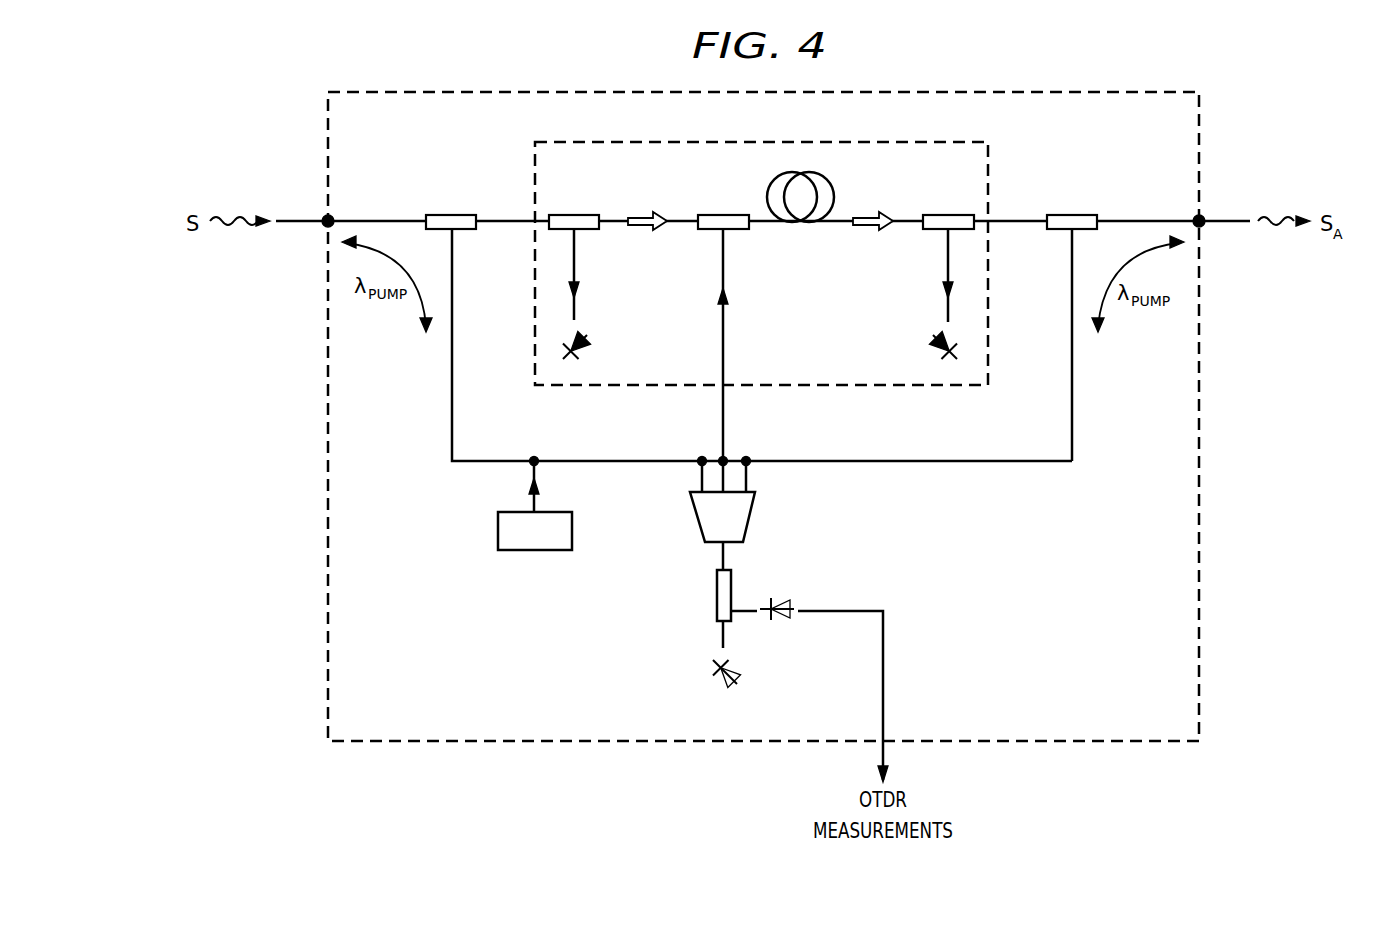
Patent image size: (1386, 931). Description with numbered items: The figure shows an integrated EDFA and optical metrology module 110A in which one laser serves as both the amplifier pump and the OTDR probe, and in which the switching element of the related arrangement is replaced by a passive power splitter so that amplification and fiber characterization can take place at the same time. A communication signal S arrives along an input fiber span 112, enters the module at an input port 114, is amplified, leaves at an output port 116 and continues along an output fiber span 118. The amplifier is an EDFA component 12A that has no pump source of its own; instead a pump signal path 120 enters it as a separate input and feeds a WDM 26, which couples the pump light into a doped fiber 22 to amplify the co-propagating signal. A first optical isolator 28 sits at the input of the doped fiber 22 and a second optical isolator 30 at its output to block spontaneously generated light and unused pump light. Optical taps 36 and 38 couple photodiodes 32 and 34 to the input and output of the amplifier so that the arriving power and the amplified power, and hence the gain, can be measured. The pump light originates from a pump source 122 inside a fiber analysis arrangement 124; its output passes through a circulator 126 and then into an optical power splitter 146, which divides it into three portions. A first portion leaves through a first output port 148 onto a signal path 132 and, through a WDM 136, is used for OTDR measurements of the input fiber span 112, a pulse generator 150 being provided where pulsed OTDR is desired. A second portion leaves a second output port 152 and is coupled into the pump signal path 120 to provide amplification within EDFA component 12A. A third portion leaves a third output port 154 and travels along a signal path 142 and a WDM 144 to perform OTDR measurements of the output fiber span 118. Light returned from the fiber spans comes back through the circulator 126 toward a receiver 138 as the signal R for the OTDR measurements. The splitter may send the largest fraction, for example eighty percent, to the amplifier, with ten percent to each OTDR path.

The EDFA component 12A is at (659, 129).
The doped fiber 22 is at (830, 197).
The WDM 26 is at (715, 214).
The first optical isolator 28 is at (641, 231).
The second optical isolator 30 is at (866, 231).
The photodiode 32 is at (583, 344).
The photodiode 34 is at (931, 350).
The optical tap 36 is at (565, 214).
The optical tap 38 is at (939, 214).
The amplifier module with OTDR monitoring 110A is at (326, 641).
The input fiber span 112 is at (303, 214).
The input port 114 is at (324, 230).
The output port 116 is at (1208, 228).
The output fiber span 118 is at (1228, 214).
The optical signal path 120 is at (726, 352).
The pump source 122 is at (713, 683).
The fiber analysis arrangement 124 is at (598, 597).
The circulator 126 is at (716, 596).
The signal path 132 is at (450, 421).
The input WDM coupler 136 is at (441, 214).
The OTDR photodetector 138 is at (784, 616).
The signal path 142 is at (1074, 425).
The WDM 144 is at (1062, 214).
The optical power splitter 146 is at (696, 518).
The first output port 148 is at (701, 458).
The pulse generator 150 is at (496, 533).
The second output port 152 is at (724, 460).
The third output port 154 is at (746, 460).